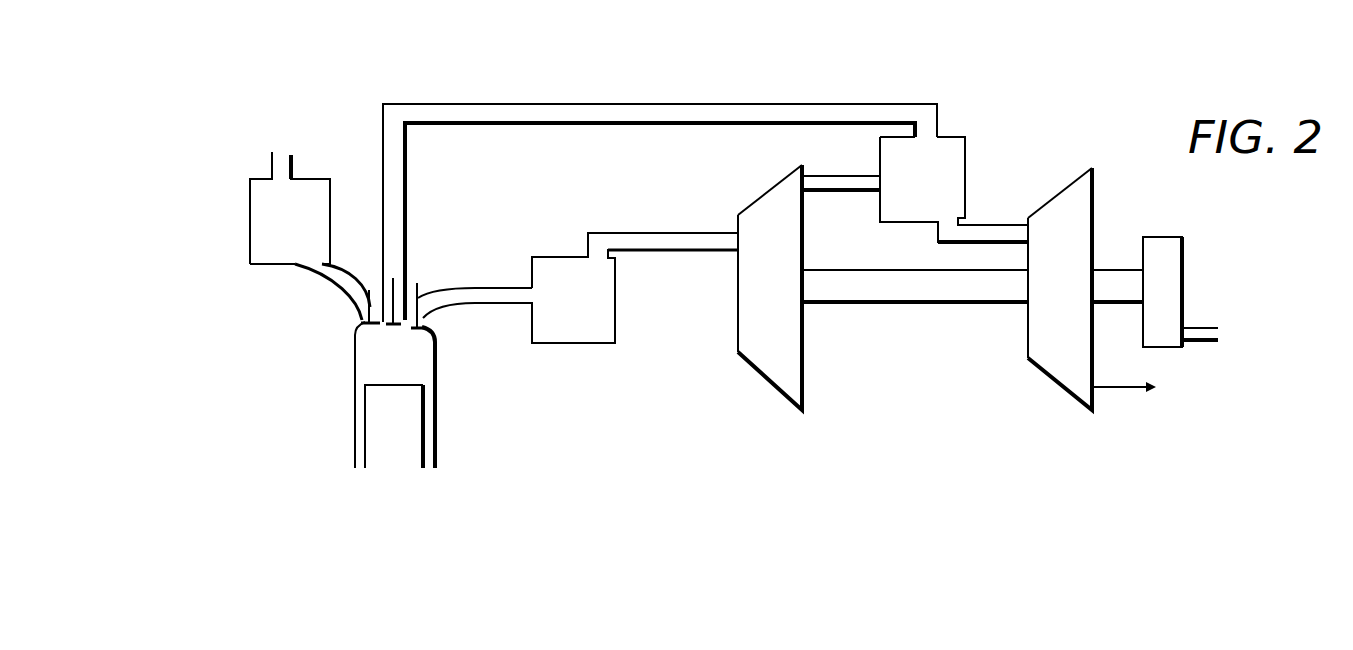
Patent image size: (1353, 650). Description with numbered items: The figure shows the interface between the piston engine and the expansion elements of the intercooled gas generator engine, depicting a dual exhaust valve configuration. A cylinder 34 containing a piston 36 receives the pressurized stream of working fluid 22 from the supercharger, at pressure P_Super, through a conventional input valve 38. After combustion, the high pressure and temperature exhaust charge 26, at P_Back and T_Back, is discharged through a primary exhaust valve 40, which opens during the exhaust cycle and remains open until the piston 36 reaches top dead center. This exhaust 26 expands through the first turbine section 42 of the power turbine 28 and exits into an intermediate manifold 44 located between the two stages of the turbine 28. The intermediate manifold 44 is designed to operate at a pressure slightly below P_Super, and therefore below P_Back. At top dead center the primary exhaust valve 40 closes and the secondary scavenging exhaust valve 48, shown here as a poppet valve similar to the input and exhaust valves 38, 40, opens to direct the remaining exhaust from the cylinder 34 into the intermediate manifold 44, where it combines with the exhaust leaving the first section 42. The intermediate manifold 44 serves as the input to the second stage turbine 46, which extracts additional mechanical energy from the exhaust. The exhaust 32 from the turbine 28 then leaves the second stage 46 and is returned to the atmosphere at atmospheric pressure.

The stream of working fluid 22 is at (260, 205).
The exhaust charge 26 is at (560, 257).
The power turbine 28 is at (907, 326).
The exhaust 32 is at (1113, 385).
The cylinder 34 is at (438, 402).
The piston 36 is at (409, 447).
The input valve 38 is at (362, 308).
The primary exhaust valve 40 is at (428, 306).
The first turbine section 42 is at (781, 308).
The intermediate manifold 44 is at (947, 193).
The second stage turbine 46 is at (1060, 289).
The secondary scavenging exhaust valve 48 is at (398, 283).